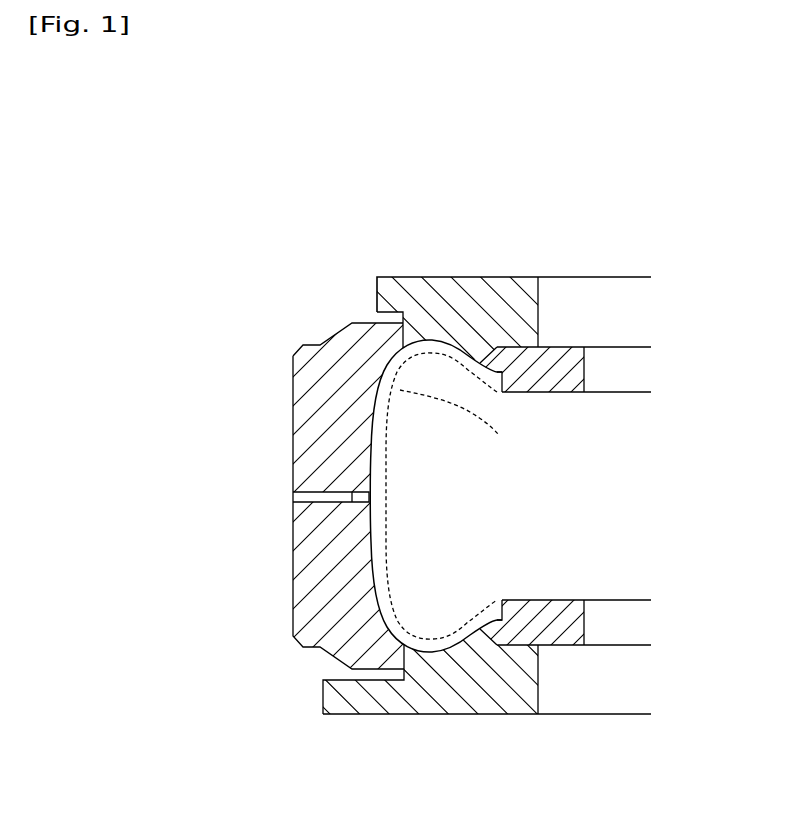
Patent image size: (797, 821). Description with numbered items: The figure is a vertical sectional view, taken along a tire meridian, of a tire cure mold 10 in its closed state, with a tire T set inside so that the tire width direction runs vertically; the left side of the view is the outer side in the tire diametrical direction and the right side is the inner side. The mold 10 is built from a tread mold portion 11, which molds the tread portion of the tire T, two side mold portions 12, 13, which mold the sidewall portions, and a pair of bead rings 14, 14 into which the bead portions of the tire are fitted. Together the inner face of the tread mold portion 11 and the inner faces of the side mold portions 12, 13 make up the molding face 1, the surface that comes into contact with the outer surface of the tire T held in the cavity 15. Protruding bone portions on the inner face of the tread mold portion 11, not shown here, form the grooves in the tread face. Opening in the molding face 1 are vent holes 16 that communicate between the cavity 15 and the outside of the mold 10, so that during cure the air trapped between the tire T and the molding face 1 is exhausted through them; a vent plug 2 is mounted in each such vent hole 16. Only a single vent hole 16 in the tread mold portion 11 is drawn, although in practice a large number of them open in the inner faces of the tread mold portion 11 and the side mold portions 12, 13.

The tire cure mold 10 is at (301, 272).
The molding face 1 is at (372, 438).
The vent plug 2 is at (384, 503).
The tread mold portion 11 is at (292, 450).
The side mold portion 12 is at (473, 277).
The side mold portion 13 is at (445, 715).
The bead ring 14 is at (553, 393).
The cavity 15 is at (466, 499).
The vent hole 16 is at (292, 497).
The tire T is at (460, 420).